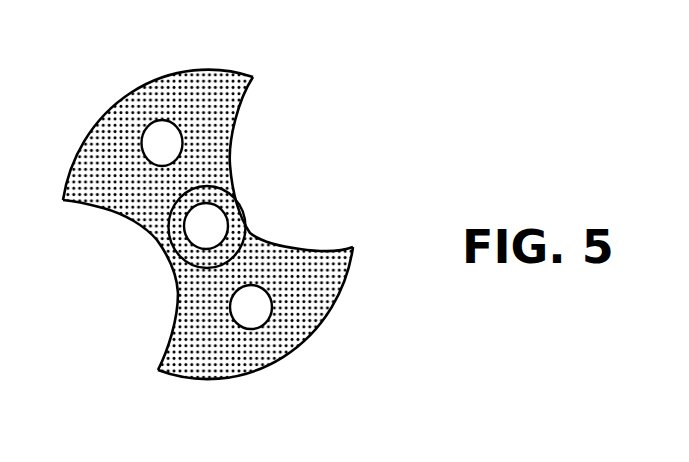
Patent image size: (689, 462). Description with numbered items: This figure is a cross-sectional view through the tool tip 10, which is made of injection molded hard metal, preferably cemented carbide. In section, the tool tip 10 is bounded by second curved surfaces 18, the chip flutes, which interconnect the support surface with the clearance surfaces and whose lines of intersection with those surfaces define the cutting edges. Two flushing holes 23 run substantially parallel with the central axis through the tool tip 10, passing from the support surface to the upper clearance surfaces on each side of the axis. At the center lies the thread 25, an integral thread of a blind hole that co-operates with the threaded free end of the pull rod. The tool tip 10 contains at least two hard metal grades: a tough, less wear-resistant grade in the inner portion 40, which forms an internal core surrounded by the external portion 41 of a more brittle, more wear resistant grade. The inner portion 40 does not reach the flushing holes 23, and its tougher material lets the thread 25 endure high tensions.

The tool tip 10 is at (356, 98).
The second curved surface (chip flute) 18 is at (115, 211).
The external portion 41 is at (212, 127).
The flushing hole 23 is at (258, 326).
The inner portion 40 is at (228, 230).
The thread 25 is at (206, 248).